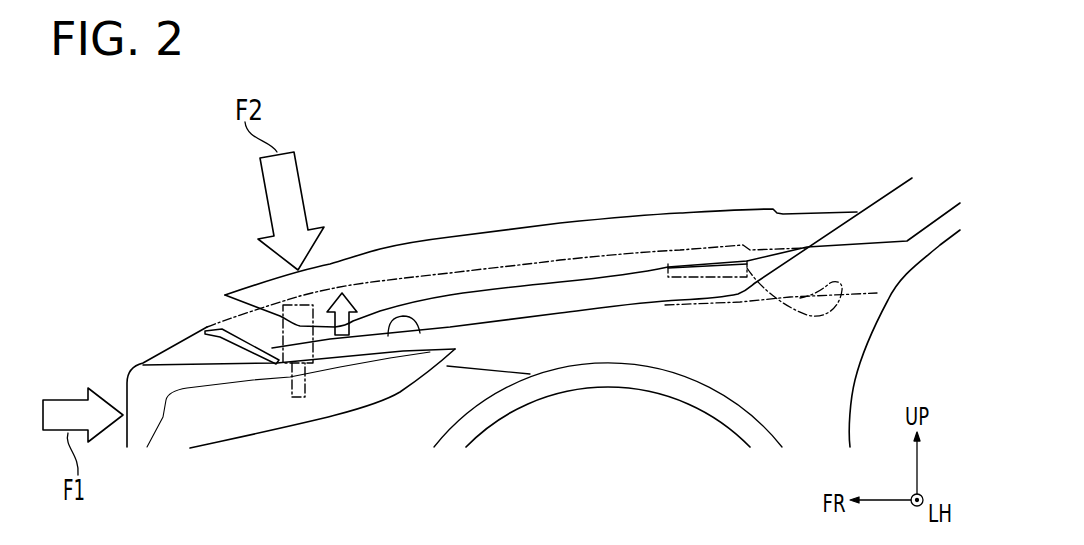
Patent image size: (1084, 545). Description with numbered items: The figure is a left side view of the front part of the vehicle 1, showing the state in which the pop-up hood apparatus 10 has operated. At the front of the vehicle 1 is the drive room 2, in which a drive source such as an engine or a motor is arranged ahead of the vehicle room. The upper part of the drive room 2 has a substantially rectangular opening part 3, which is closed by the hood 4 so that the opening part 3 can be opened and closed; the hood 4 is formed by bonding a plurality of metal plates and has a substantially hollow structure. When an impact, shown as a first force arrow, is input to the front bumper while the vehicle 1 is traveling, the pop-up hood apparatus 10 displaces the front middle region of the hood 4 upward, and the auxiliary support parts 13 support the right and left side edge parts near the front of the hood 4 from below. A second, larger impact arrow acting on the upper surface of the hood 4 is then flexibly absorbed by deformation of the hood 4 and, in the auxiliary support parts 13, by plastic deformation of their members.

The vehicle 1 is at (465, 163).
The drive room 2 is at (261, 333).
The opening part 3 is at (388, 336).
The hood 4 is at (422, 270).
The pop-up hood apparatus 10 is at (274, 366).
The auxiliary support parts 13 is at (320, 373).